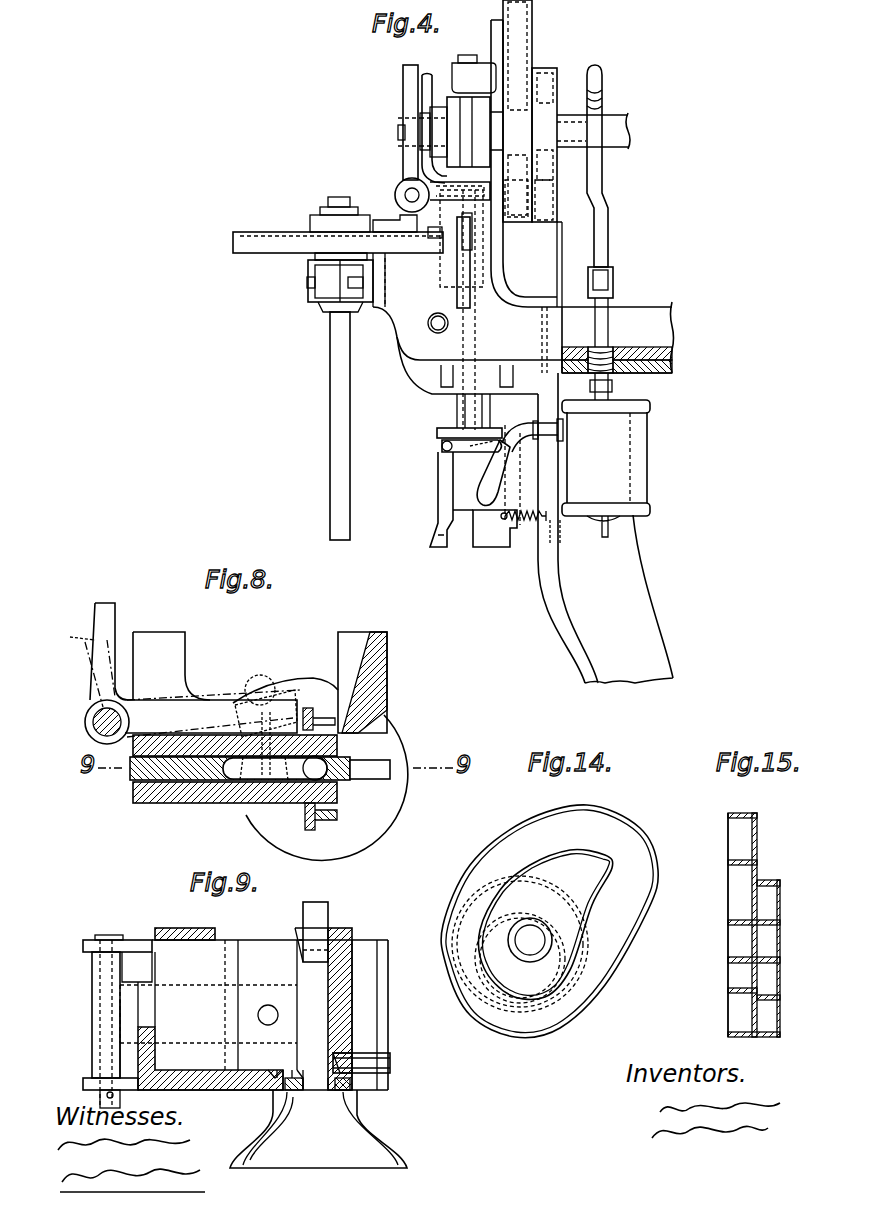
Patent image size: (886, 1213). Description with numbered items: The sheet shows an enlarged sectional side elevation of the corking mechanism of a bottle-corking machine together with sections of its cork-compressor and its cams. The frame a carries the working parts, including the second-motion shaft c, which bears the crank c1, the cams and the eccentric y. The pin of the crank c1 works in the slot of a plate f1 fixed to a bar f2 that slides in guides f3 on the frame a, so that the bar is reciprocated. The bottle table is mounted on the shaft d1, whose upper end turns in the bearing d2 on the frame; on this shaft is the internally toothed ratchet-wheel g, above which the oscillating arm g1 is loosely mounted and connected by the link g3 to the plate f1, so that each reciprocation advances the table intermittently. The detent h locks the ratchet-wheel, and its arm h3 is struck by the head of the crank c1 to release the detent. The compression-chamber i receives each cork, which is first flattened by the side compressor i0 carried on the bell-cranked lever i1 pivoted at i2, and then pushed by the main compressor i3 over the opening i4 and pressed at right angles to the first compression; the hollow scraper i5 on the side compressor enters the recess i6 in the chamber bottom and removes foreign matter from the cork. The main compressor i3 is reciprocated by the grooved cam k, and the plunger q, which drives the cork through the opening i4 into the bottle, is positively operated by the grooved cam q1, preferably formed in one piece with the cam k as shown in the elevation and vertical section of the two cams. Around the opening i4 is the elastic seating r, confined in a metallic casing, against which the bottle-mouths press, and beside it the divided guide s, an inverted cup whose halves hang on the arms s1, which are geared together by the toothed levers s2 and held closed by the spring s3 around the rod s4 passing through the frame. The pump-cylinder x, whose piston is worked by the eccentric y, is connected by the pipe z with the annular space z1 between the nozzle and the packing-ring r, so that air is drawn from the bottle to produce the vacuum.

In FIG. 4, the frame a is at (523, 351).
In FIG. 4, the second-motion shaft c is at (514, 111).
In FIG. 4, the crank c1 is at (398, 132).
In FIG. 4, the table shaft d1 is at (350, 483).
In FIG. 4, the bearing d2 is at (320, 312).
In FIG. 4, the slotted plate f1 is at (403, 92).
In FIG. 4, the sliding bar f2 is at (404, 183).
In FIG. 4, the guides f3 is at (395, 195).
In FIG. 4, the ratchet-wheel g is at (233, 242).
In FIG. 4, the oscillating arm g1 is at (385, 232).
In FIG. 4, the link g3 is at (407, 238).
In FIG. 4, the detent h is at (452, 240).
In FIG. 4, the detent arm h3 is at (432, 75).
In FIG. 8, the compression-chamber i is at (208, 804).
In FIG. 9, the compression-chamber i is at (364, 1009).
In FIG. 8, the side compressor i0 is at (240, 769).
In FIG. 9, the side compressor i0 is at (280, 1015).
In FIG. 8, the bell-cranked lever i1 is at (100, 624).
In FIG. 9, the bell-cranked lever i1 is at (92, 1042).
In FIG. 8, the pivot i2 is at (95, 730).
In FIG. 9, the pivot i2 is at (108, 1008).
In FIG. 8, the main compressor i3 is at (130, 775).
In FIG. 9, the main compressor i3 is at (254, 1009).
In FIG. 8, the nozzle opening i4 is at (323, 770).
In FIG. 9, the nozzle opening i4 is at (316, 1092).
In FIG. 8, the scraper i5 is at (276, 795).
In FIG. 9, the scraper i5 is at (268, 1070).
In FIG. 8, the recess i6 is at (266, 790).
In FIG. 9, the recess i6 is at (282, 1062).
In FIG. 4, the cam k is at (553, 93).
In FIG. 14, the cam k is at (556, 900).
In FIG. 15, the cam k is at (775, 910).
In FIG. 4, the plunger q is at (465, 404).
In FIG. 9, the plunger q is at (328, 917).
In FIG. 4, the grooved cam q1 is at (541, 22).
In FIG. 14, the grooved cam q1 is at (651, 921).
In FIG. 15, the grooved cam q1 is at (729, 838).
In FIG. 9, the elastic seating r is at (288, 1092).
In FIG. 4, the divided guide s is at (487, 548).
In FIG. 9, the divided guide s is at (385, 1145).
In FIG. 4, the arms s1 is at (440, 488).
In FIG. 4, the toothed levers s2 is at (470, 452).
In FIG. 4, the spring s3 is at (522, 523).
In FIG. 4, the rod s4 is at (566, 540).
In FIG. 4, the pump-cylinder x is at (606, 455).
In FIG. 4, the eccentric y is at (603, 172).
In FIG. 4, the pipe z is at (527, 424).
In FIG. 8, the pipe z is at (375, 765).
In FIG. 9, the pipe z is at (390, 1063).
In FIG. 9, the annular space z1 is at (352, 1051).